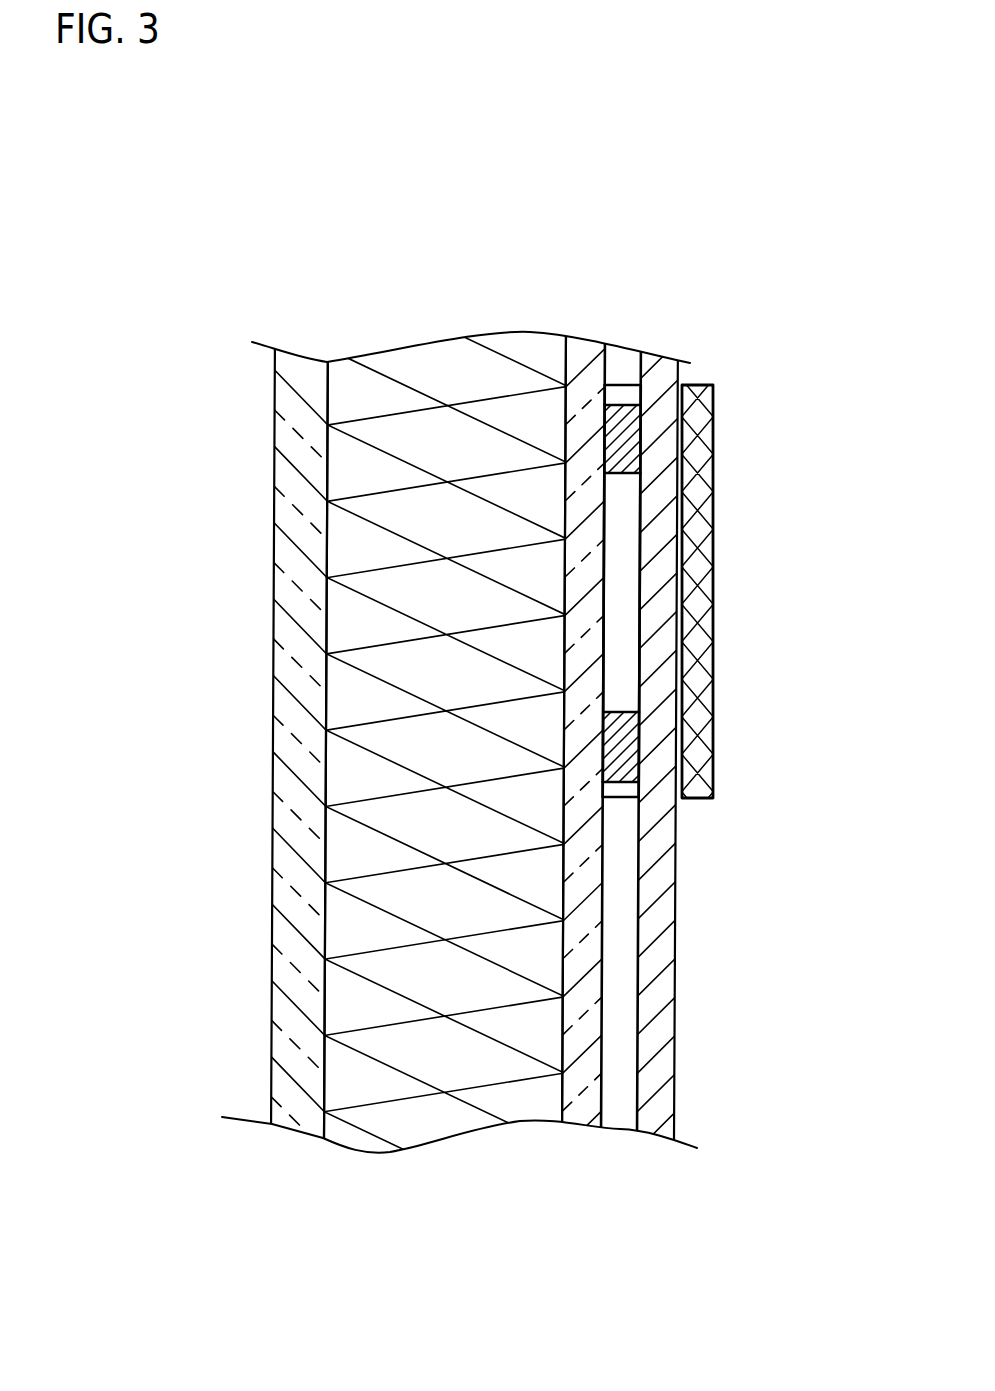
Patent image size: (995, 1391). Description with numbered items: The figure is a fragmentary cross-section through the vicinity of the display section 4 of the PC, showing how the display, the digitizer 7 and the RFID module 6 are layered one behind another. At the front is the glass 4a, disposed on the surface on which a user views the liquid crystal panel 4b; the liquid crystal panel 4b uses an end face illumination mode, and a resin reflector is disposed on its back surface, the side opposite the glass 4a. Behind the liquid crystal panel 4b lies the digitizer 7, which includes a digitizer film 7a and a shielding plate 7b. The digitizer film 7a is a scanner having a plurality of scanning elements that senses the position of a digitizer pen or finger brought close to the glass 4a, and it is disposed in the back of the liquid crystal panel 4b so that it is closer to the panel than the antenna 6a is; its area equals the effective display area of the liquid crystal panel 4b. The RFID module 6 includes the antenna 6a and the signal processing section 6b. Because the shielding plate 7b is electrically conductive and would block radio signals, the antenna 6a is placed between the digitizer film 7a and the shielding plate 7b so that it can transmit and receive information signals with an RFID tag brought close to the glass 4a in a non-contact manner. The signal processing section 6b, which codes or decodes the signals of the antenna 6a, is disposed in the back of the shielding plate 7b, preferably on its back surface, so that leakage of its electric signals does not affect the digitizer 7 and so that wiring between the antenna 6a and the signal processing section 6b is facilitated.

The display section 4 is at (398, 232).
The glass 4a is at (307, 383).
The liquid crystal panel 4b is at (412, 383).
The RFID module 6 is at (772, 220).
The antenna 6a is at (620, 413).
The signal processing section 6b is at (697, 407).
The digitizer 7 is at (702, 1252).
The digitizer film 7a is at (580, 1098).
The shielding plate 7b is at (657, 1110).